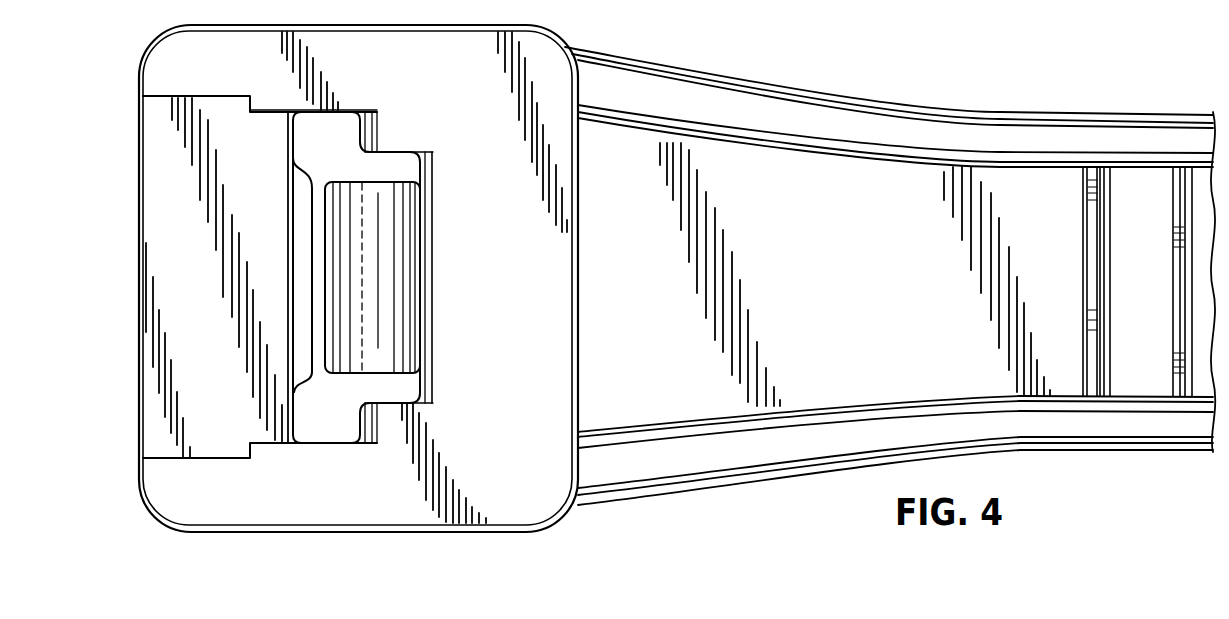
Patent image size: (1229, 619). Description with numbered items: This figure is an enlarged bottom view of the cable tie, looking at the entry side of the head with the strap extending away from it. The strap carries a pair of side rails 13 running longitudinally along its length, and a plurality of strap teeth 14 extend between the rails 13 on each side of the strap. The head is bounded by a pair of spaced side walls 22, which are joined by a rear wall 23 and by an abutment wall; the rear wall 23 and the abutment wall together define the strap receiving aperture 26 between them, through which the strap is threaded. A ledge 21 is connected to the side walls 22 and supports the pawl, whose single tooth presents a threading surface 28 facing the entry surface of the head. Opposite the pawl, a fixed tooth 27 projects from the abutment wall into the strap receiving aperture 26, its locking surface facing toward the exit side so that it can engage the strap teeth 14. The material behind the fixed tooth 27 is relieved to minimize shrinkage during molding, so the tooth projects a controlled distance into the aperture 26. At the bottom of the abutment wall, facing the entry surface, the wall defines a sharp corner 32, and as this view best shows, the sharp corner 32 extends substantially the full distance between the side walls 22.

The side rails 13 is at (888, 123).
The strap teeth 14 is at (1093, 226).
The ledge 21 is at (430, 328).
The side walls 22 is at (364, 73).
The rear wall 23 is at (514, 266).
The strap receiving aperture 26 is at (318, 256).
The fixed tooth 27 is at (302, 318).
The threading surface 28 is at (345, 291).
The sharp corner 32 is at (288, 137).